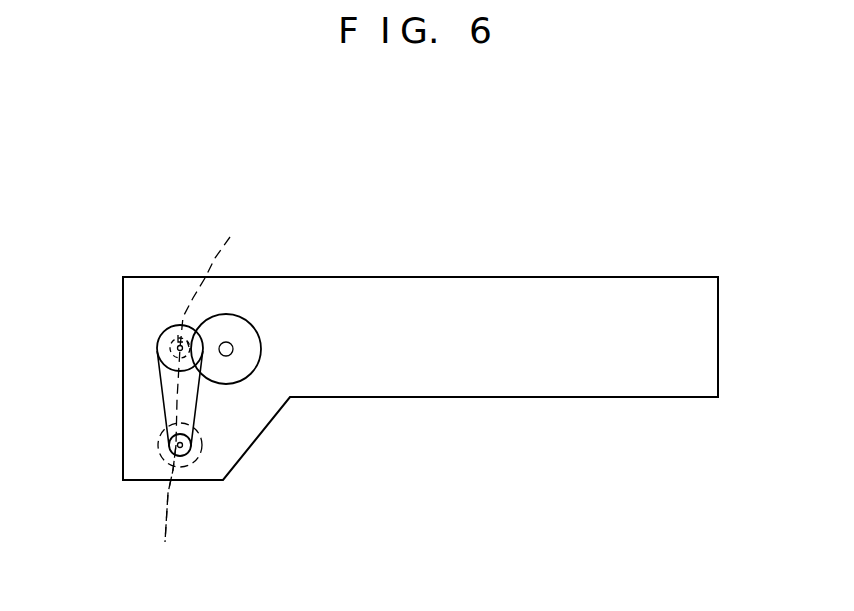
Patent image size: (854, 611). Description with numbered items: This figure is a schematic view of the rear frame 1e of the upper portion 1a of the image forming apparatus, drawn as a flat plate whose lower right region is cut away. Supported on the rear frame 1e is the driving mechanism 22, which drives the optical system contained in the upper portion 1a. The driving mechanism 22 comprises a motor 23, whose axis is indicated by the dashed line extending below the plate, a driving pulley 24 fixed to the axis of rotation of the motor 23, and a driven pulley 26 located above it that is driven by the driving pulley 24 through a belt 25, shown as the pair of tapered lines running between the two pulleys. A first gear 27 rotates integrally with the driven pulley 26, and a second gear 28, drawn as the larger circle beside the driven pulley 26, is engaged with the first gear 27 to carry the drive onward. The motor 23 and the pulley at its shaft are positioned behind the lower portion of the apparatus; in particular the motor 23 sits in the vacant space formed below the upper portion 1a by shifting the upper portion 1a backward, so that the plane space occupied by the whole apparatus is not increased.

The upper portion 1a is at (653, 307).
The rear frame 1e is at (693, 361).
The driving mechanism 22 is at (117, 323).
The motor 23 is at (167, 514).
The driving pulley 24 is at (191, 445).
The belt 25 is at (158, 400).
The driven pulley 26 is at (157, 347).
The first gear 27 is at (216, 369).
The second gear 28 is at (242, 318).